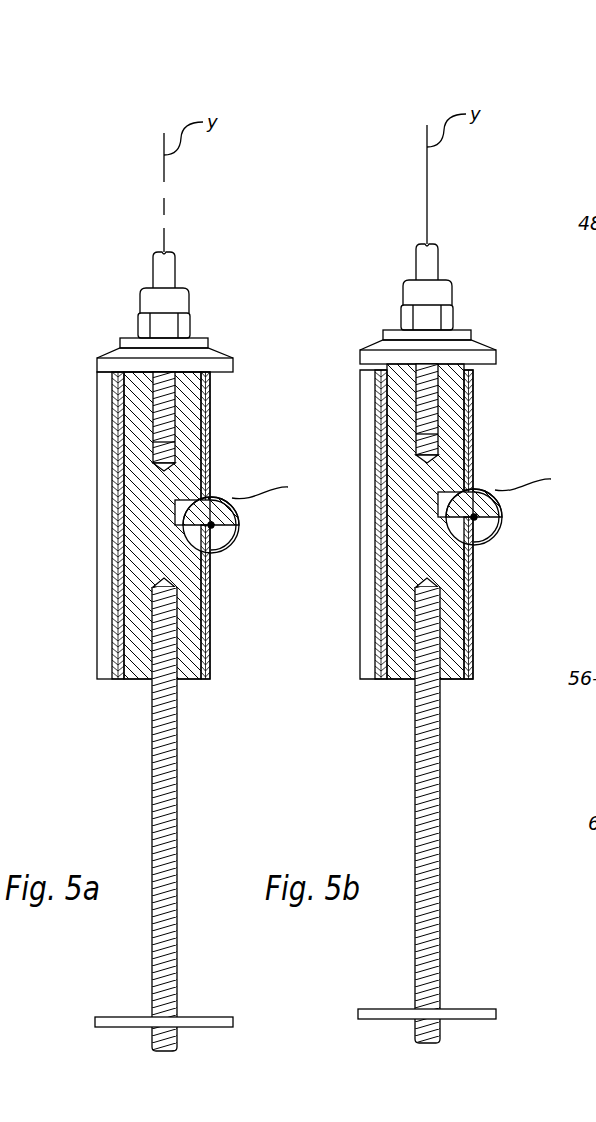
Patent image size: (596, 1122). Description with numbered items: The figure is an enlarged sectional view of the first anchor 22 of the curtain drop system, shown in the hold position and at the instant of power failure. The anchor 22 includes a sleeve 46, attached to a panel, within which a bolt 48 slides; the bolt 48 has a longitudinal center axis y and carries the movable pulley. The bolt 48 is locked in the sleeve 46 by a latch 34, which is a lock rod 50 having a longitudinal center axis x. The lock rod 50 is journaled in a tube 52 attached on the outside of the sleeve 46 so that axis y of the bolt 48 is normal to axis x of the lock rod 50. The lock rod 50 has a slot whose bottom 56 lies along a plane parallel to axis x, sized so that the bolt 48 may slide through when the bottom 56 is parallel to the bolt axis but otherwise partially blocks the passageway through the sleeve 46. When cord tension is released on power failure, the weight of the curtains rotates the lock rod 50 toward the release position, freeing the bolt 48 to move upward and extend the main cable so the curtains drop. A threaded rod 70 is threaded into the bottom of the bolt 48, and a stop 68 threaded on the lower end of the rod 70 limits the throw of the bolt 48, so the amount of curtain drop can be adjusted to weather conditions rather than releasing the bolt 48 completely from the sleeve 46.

In FIG. 5A, the first anchor 22 is at (227, 342).
In FIG. 5B, the first anchor 22 is at (466, 304).
In FIG. 5A, the latch 34 is at (230, 475).
In FIG. 5B, the latch 34 is at (466, 524).
In FIG. 5A, the sleeve 46 is at (112, 618).
In FIG. 5B, the sleeve 46 is at (379, 524).
In FIG. 5A, the bolt 48 is at (205, 640).
In FIG. 5B, the bolt 48 is at (468, 521).
In FIG. 5A, the lock rod 50 is at (238, 512).
In FIG. 5B, the lock rod 50 is at (519, 517).
In FIG. 5A, the tube 52 is at (228, 550).
In FIG. 5B, the tube 52 is at (502, 525).
In FIG. 5A, the bottom of slot 56 is at (210, 525).
In FIG. 5B, the bottom of slot 56 is at (414, 549).
In FIG. 5A, the stop 68 is at (197, 1015).
In FIG. 5B, the stop 68 is at (455, 978).
In FIG. 5A, the threaded rod 70 is at (177, 852).
In FIG. 5B, the threaded rod 70 is at (466, 815).